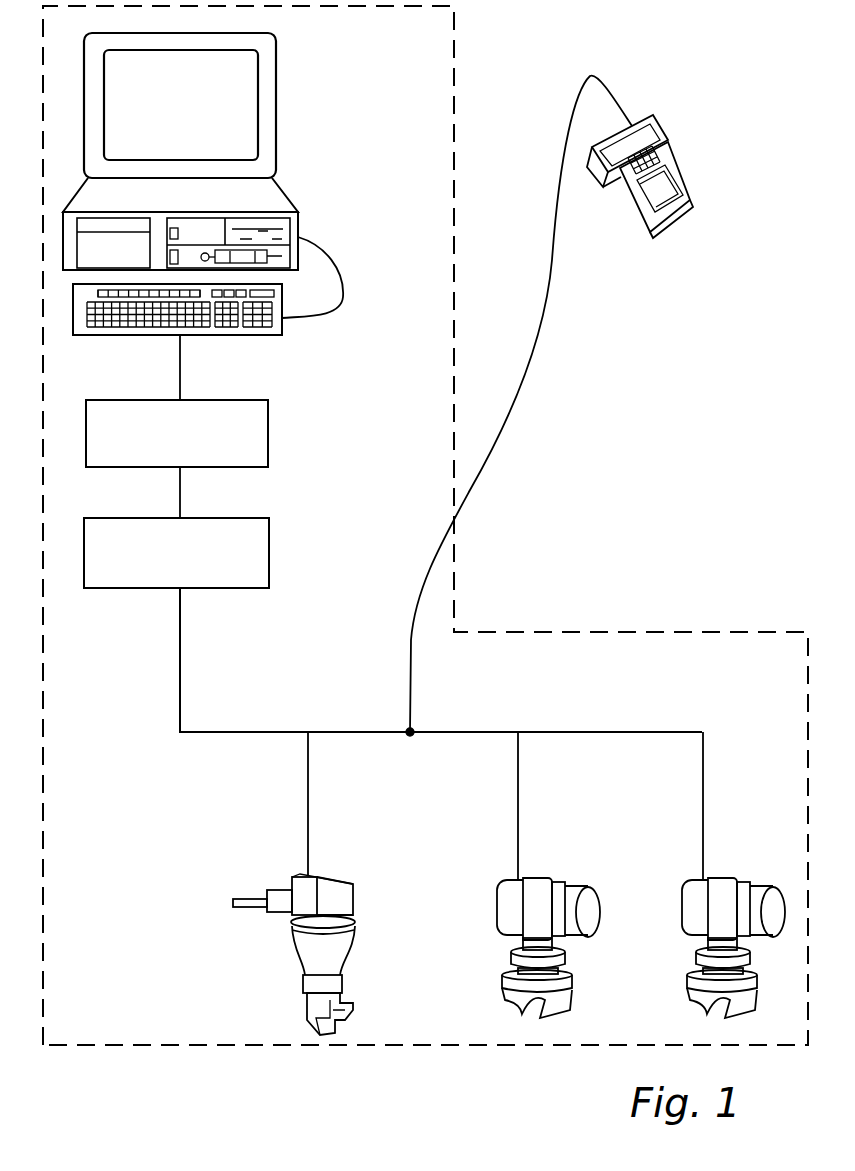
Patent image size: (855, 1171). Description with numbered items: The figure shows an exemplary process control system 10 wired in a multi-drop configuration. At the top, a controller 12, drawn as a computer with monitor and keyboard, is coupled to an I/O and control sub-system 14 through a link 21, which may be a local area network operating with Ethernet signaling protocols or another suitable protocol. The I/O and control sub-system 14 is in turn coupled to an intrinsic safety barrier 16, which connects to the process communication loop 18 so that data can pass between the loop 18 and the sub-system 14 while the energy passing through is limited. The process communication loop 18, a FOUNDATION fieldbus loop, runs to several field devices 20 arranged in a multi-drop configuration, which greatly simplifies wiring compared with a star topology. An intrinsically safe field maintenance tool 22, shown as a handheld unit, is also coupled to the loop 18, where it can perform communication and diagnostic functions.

The system 10 is at (272, 400).
The controller 12 is at (276, 82).
The I/O and control sub-system 14 is at (268, 416).
The intrinsic safety barrier 16 is at (269, 540).
The process communication loop 18 is at (477, 732).
The field devices 20 is at (302, 942).
The link 21 is at (180, 362).
The intrinsically safe field maintenance tool 22 is at (670, 120).